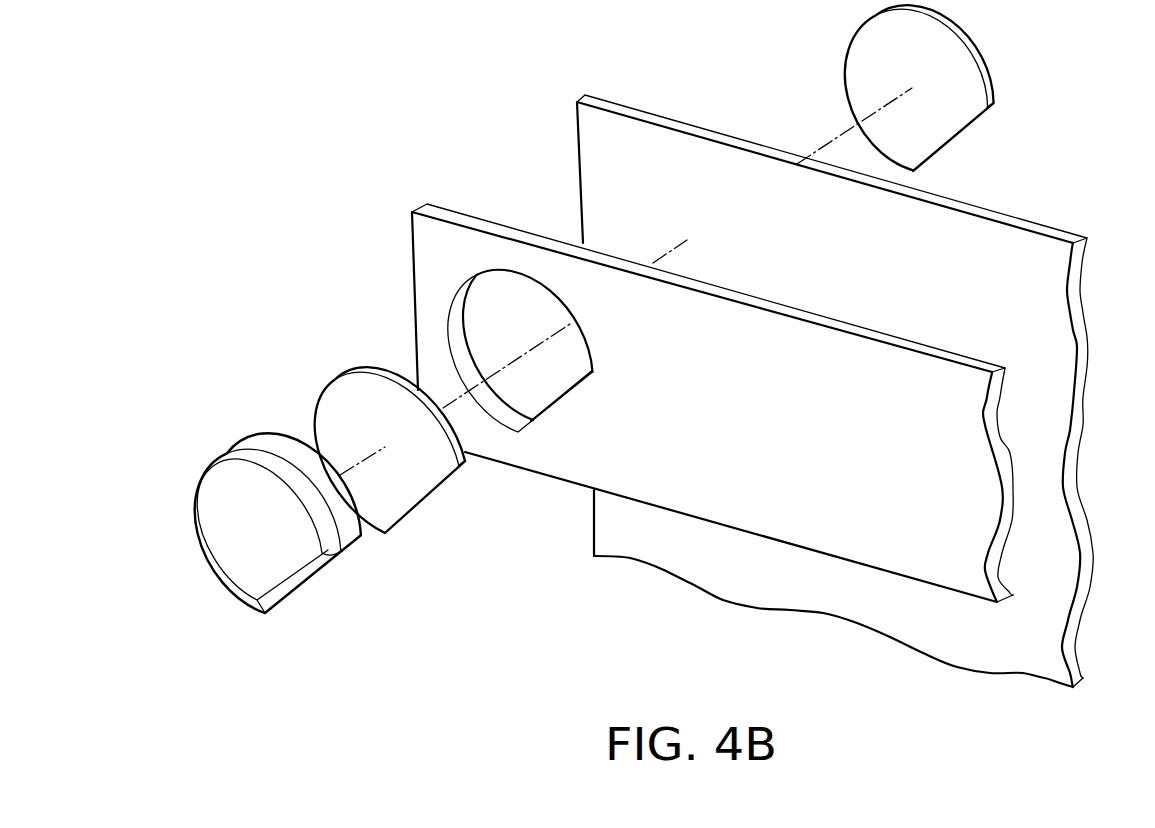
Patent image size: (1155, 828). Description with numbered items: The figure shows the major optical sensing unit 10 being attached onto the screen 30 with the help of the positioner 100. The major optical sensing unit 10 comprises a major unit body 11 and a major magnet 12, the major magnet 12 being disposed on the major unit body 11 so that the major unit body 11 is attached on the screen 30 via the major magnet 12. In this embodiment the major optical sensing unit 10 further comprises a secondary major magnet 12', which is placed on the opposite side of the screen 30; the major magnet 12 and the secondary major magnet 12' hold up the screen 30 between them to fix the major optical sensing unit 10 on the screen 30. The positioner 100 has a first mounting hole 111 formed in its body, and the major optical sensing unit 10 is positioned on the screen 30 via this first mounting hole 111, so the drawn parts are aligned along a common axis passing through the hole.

The major optical sensing unit 10 is at (521, 29).
The major unit body 11 is at (240, 497).
The major magnet 12 is at (374, 363).
The secondary major magnet 12' is at (743, 88).
The screen 30 is at (1032, 260).
The positioner 100 is at (677, 455).
The first mounting hole 111 is at (513, 390).